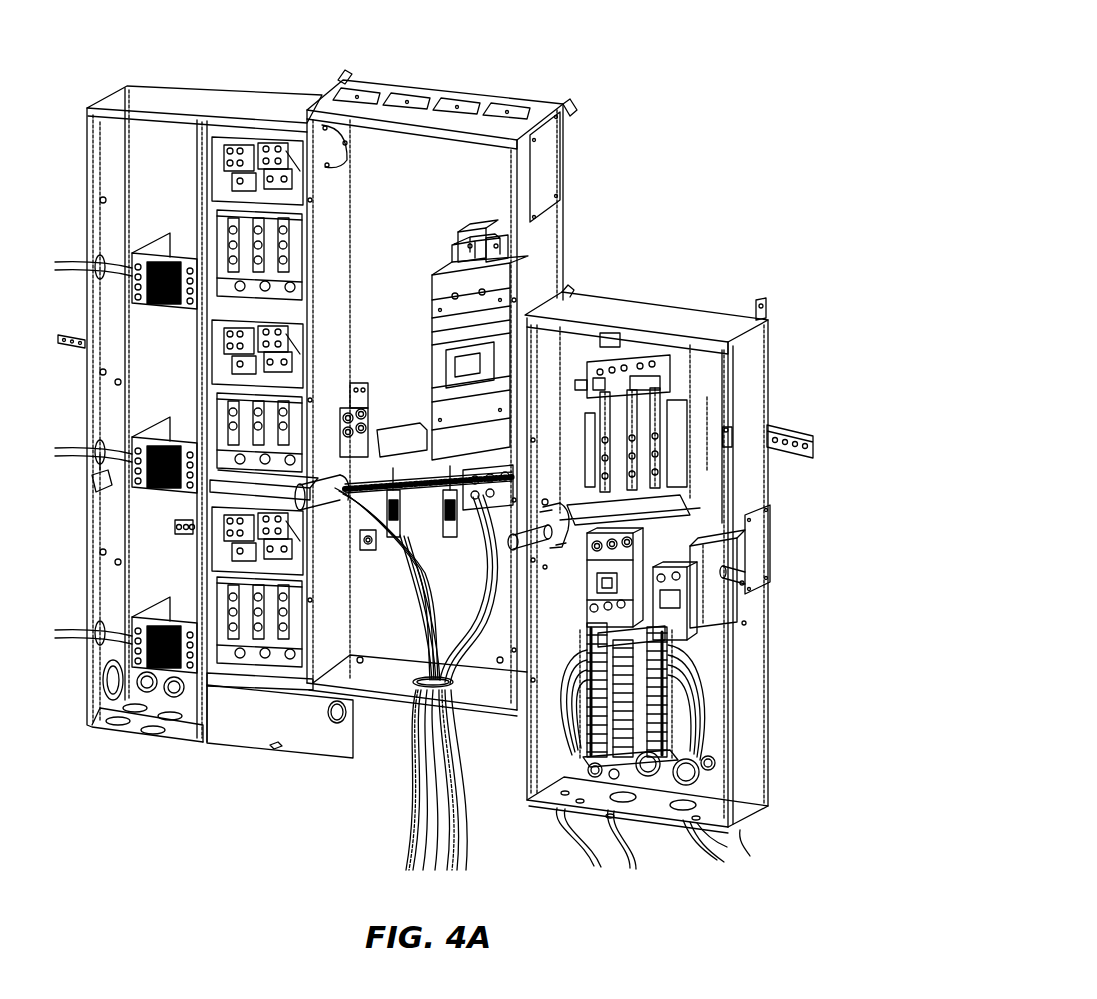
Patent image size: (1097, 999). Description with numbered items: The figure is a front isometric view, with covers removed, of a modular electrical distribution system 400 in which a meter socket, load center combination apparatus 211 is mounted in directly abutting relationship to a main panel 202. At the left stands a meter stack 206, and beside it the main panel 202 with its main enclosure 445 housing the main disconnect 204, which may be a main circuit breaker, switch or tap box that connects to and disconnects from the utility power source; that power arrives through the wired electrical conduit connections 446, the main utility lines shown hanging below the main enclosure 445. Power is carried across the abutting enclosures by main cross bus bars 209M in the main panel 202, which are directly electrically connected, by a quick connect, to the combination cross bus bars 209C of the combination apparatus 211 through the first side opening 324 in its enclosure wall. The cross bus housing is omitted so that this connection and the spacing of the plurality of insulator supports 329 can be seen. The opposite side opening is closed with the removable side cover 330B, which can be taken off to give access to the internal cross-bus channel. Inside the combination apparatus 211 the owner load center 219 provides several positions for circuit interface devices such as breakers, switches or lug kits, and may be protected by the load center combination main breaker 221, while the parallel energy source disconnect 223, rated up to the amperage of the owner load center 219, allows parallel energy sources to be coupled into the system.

The modular electrical distribution system 400 is at (690, 135).
The meter stack 206 is at (232, 90).
The main panel 202 is at (470, 80).
The main enclosure 445 is at (398, 113).
The main disconnect 204 is at (440, 302).
The main cross bus bars 209M is at (417, 513).
The wired electrical conduit connections 446 is at (472, 798).
The first side opening 324 is at (543, 486).
The meter socket, load center combination apparatus 211 is at (676, 298).
The combination cross bus bars 209C is at (702, 535).
The removable side cover 330B is at (757, 562).
The insulator supports 329 is at (685, 605).
The parallel energy source disconnect 223 is at (640, 601).
The load center combination main breaker 221 is at (650, 612).
The owner load center 219 is at (680, 757).